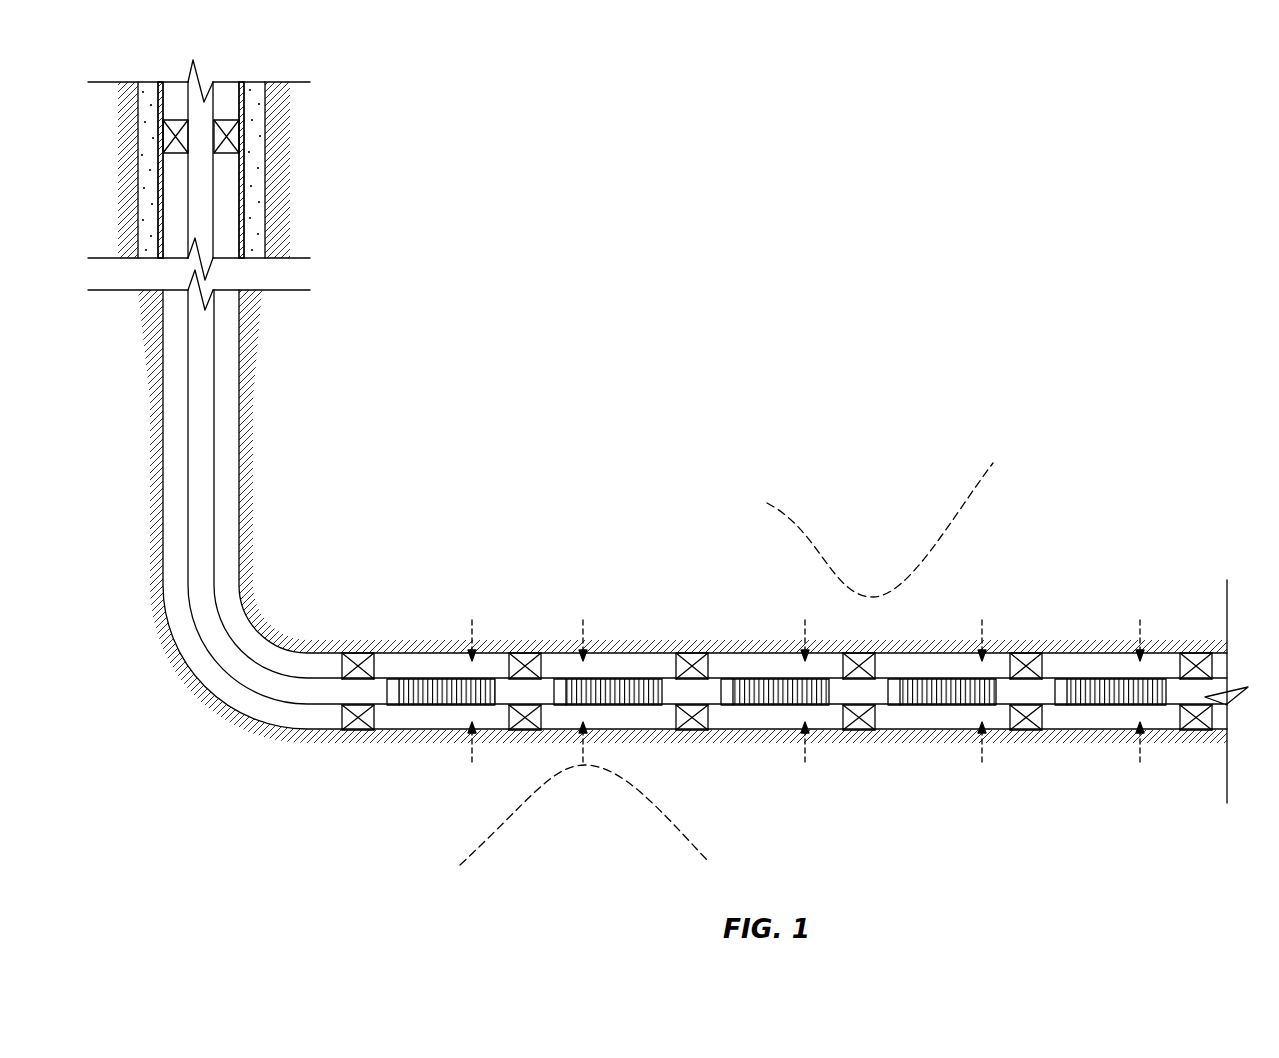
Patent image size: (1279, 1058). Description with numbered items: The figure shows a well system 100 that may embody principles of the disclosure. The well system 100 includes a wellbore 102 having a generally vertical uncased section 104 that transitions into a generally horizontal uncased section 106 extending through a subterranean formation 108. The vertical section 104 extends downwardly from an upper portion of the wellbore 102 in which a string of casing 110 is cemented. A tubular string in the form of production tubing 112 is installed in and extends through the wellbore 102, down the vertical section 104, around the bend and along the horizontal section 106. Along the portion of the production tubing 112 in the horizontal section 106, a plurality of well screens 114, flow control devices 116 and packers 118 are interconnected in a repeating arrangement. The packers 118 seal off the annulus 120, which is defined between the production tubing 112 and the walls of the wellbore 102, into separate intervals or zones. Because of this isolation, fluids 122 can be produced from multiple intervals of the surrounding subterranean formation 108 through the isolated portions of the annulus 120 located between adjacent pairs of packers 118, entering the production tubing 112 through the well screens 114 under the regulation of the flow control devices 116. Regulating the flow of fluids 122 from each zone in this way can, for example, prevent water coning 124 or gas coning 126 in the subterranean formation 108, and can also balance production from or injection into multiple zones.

The well system 100 is at (595, 205).
The wellbore 102 is at (239, 402).
The vertical uncased section 104 is at (239, 335).
The horizontal uncased section 106 is at (650, 656).
The subterranean formation 108 is at (688, 577).
The casing 110 is at (243, 172).
The production tubing 112 is at (219, 466).
The well screen 114 is at (463, 678).
The flow control device 116 is at (393, 678).
The packer 118 is at (358, 730).
The annulus 120 is at (753, 723).
The fluids 122 is at (476, 632).
The water coning 124 is at (488, 842).
The gas coning 126 is at (968, 500).